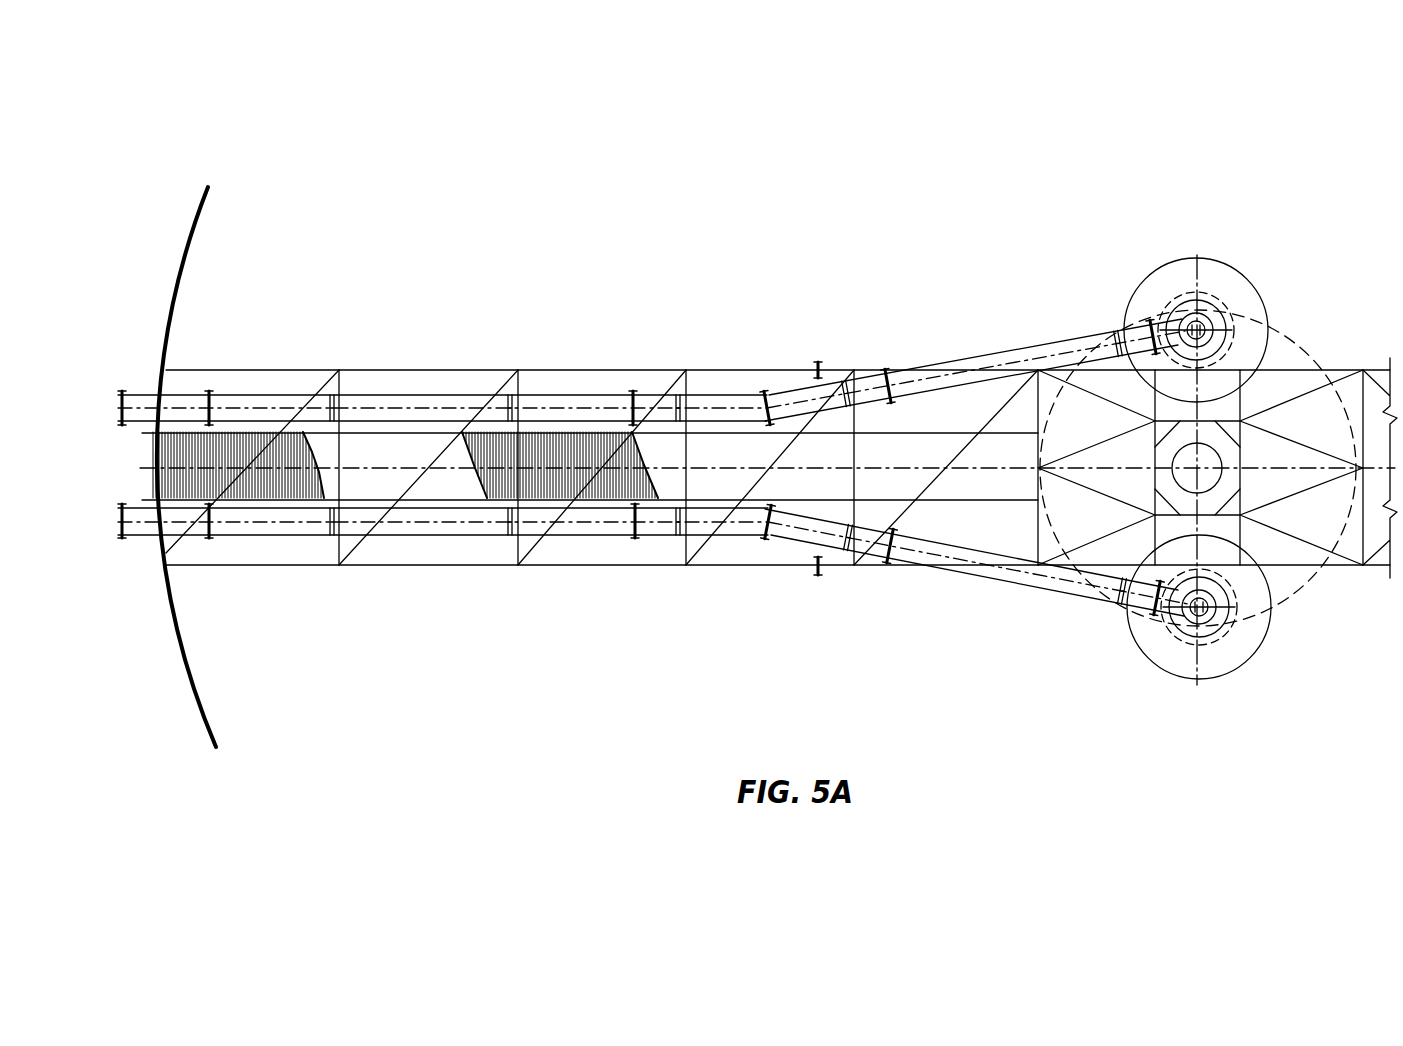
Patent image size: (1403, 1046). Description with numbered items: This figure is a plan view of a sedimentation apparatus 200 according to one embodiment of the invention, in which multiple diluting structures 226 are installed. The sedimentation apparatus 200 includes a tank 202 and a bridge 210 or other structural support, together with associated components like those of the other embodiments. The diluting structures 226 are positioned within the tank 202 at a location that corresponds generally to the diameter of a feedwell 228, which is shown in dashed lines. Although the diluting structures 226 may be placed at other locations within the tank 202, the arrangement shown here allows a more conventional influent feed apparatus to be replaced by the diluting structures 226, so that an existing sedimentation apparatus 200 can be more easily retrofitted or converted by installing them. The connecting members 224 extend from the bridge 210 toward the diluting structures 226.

The sedimentation apparatus 200 is at (242, 154).
The tank 202 is at (203, 215).
The bridge 210 is at (358, 369).
The strut 224 is at (1019, 353).
The diluting structures 226 is at (1171, 240).
The feedwell 228 is at (1285, 330).